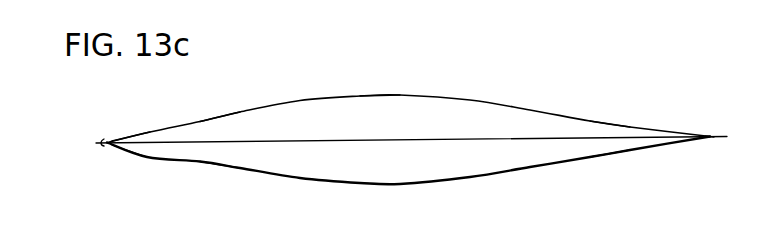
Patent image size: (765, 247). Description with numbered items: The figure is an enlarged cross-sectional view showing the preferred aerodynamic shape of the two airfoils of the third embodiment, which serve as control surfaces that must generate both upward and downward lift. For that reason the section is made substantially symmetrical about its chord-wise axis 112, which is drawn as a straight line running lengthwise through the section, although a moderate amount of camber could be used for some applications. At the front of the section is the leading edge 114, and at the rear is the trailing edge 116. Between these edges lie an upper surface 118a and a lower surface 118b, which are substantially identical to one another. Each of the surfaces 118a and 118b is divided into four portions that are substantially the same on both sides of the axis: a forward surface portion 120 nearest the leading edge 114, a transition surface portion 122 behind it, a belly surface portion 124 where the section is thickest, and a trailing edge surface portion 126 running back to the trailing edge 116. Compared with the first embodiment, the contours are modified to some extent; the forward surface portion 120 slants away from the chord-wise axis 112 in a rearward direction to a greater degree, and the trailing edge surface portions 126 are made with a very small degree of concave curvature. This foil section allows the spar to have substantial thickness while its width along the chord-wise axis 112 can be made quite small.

The chord-wise axis 112 is at (477, 138).
The leading edge 114 is at (106, 142).
The trailing edge 116 is at (710, 138).
The upper surface 118a is at (415, 95).
The lower surface 118b is at (403, 184).
The forward surface portion 120 is at (152, 133).
The transition surface portion 122 is at (241, 111).
The belly surface portion 124 is at (377, 96).
The trailing edge surface portion 126 is at (623, 126).